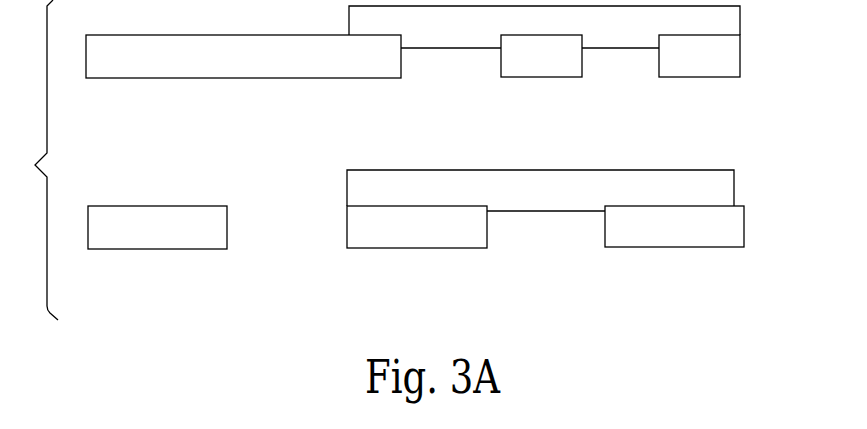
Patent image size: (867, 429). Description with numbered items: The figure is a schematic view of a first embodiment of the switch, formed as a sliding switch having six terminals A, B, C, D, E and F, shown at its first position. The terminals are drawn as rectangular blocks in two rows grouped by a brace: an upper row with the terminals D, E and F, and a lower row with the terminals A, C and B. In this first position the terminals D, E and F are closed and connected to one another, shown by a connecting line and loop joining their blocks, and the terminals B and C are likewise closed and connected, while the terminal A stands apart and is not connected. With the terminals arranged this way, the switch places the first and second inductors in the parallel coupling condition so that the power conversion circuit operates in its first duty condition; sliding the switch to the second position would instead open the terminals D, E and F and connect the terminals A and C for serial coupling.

The terminal A is at (157, 246).
The terminal B is at (674, 246).
The terminal C is at (417, 246).
The terminal D is at (243, 77).
The terminal E is at (541, 77).
The terminal F is at (699, 77).